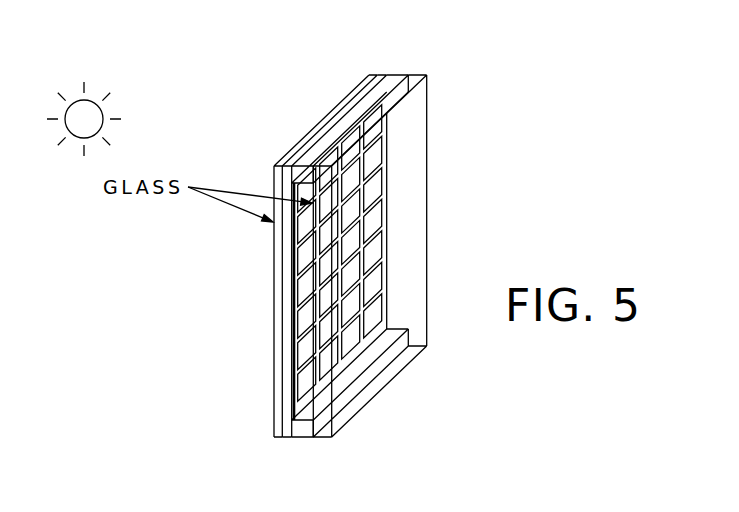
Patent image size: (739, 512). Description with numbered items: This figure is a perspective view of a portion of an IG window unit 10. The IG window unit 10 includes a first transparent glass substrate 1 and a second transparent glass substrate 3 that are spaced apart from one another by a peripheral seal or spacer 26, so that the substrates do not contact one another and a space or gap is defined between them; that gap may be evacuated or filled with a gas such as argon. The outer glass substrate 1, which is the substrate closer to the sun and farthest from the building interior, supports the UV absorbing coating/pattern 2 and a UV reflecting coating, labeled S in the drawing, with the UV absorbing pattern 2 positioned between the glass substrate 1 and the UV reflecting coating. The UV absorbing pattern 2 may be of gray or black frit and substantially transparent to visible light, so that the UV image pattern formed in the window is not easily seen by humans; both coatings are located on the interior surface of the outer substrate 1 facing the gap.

The IG window unit 10 is at (479, 114).
The first transparent glass substrate 1 is at (282, 417).
The second transparent glass substrate 3 is at (325, 435).
The spacer 26 is at (391, 86).
The UV absorbing coating/pattern 2 is at (280, 282).
The UV reflecting coating S is at (288, 333).